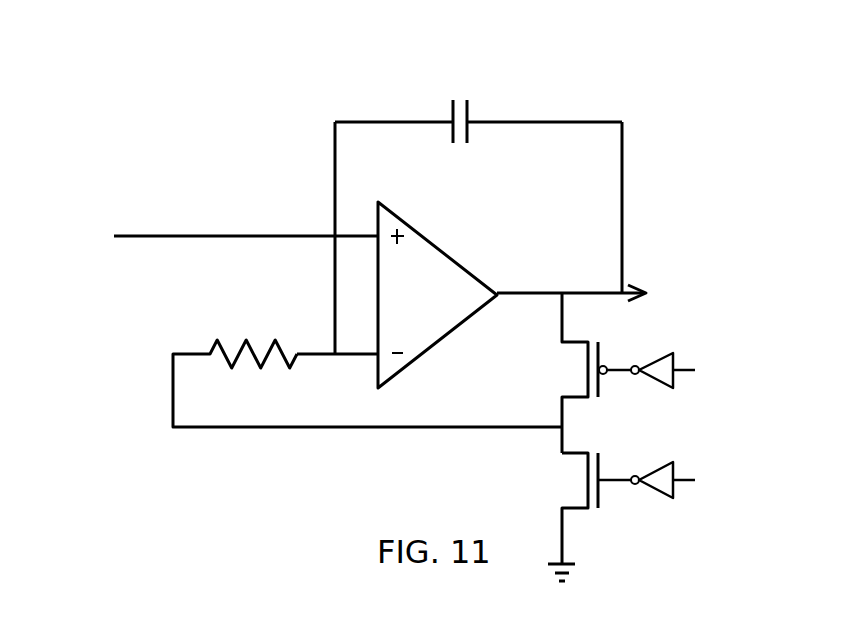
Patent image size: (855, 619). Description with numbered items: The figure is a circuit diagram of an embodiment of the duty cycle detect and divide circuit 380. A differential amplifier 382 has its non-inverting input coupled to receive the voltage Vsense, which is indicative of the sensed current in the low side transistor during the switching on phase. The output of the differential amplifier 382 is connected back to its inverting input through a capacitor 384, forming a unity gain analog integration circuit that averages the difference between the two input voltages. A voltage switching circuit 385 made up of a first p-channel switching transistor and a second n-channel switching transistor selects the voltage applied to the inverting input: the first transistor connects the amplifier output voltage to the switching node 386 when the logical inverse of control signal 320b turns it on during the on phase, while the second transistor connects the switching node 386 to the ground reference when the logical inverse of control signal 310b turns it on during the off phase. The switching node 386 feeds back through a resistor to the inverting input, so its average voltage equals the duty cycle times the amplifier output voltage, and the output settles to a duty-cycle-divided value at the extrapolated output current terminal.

The duty cycle detect and divide circuit 380 is at (396, 300).
The differential amplifier 382 is at (467, 320).
The capacitor 384 is at (460, 97).
The voltage switching circuit 385 is at (525, 462).
The switching node 386 is at (563, 433).
The control signal 320b is at (680, 370).
The control signal 310b is at (692, 480).